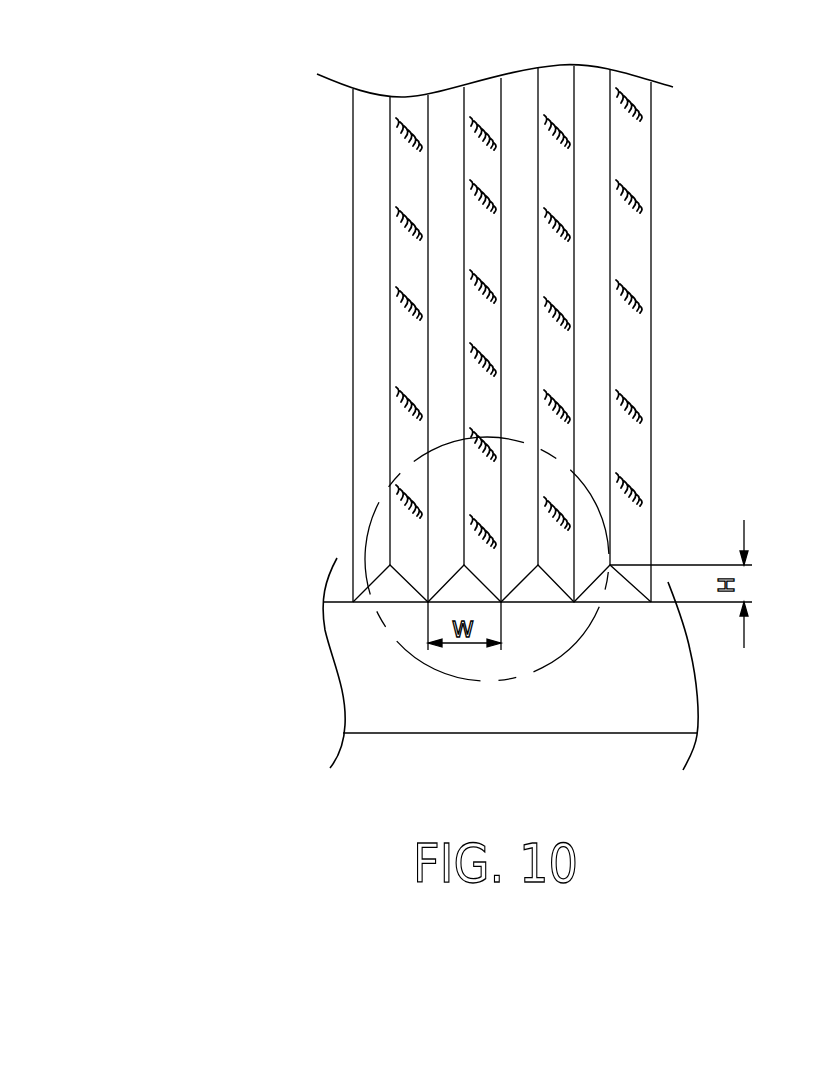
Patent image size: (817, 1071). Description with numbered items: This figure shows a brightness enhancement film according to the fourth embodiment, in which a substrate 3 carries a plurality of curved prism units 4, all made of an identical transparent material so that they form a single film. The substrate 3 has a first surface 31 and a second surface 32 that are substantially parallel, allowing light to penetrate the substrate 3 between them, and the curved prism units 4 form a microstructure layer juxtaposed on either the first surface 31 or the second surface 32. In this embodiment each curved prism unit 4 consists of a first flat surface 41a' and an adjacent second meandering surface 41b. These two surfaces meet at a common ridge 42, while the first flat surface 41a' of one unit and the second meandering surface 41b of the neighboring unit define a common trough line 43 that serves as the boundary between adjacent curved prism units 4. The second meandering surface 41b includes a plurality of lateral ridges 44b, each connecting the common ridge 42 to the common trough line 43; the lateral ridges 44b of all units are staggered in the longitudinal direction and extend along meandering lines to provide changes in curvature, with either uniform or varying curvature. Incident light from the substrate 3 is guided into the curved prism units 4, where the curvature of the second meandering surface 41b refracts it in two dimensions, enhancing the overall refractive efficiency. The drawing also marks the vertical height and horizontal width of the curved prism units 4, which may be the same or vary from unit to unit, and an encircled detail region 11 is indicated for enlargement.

The substrate 3 is at (461, 692).
The first surface 31 is at (375, 603).
The second surface 32 is at (489, 779).
The curved prism unit 4 is at (383, 587).
The first flat surface 41a' is at (284, 345).
The second meandering surface 41b is at (637, 368).
The common ridge 42 is at (390, 243).
The common trough line 43 is at (427, 287).
The lateral ridges 44b is at (637, 490).
The enlarged region 11 is at (602, 580).